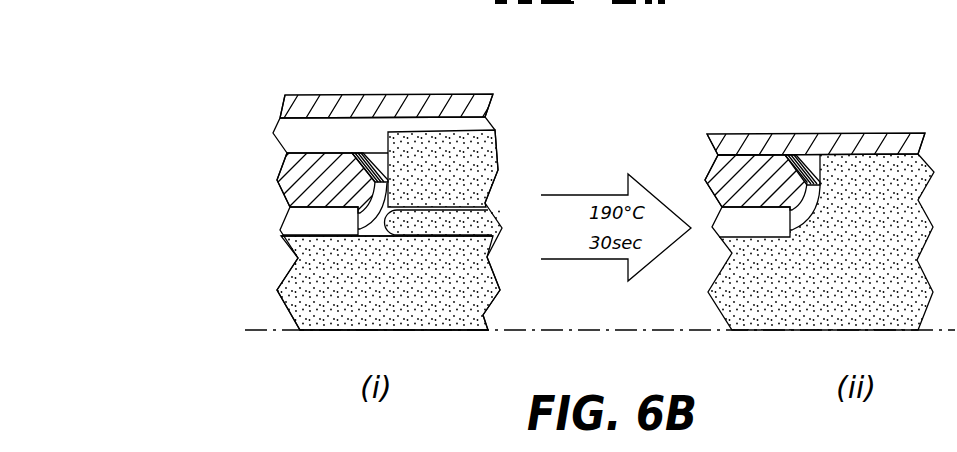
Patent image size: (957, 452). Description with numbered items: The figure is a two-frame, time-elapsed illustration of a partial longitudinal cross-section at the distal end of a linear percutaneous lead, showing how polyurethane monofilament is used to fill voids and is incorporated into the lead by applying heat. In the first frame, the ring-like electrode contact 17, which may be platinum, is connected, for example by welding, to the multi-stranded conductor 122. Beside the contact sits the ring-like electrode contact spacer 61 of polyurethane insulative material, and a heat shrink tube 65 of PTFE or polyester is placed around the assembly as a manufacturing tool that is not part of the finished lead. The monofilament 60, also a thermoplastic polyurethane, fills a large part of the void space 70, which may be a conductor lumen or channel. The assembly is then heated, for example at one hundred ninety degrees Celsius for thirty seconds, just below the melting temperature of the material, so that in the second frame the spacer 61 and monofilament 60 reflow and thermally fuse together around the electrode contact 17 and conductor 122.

The electrode contact 17 is at (297, 180).
The monofilament 60 is at (457, 223).
The electrode contact spacer 61 is at (438, 145).
The heat shrink tube 65 is at (315, 107).
The void space 70 is at (378, 222).
The multi-stranded conductor 122 is at (310, 222).